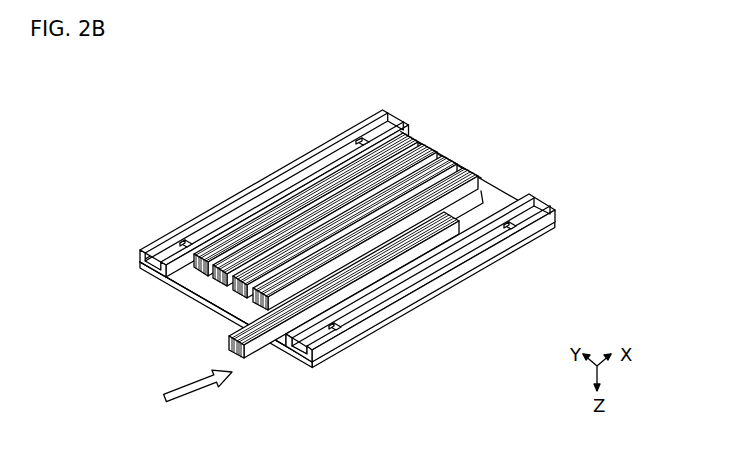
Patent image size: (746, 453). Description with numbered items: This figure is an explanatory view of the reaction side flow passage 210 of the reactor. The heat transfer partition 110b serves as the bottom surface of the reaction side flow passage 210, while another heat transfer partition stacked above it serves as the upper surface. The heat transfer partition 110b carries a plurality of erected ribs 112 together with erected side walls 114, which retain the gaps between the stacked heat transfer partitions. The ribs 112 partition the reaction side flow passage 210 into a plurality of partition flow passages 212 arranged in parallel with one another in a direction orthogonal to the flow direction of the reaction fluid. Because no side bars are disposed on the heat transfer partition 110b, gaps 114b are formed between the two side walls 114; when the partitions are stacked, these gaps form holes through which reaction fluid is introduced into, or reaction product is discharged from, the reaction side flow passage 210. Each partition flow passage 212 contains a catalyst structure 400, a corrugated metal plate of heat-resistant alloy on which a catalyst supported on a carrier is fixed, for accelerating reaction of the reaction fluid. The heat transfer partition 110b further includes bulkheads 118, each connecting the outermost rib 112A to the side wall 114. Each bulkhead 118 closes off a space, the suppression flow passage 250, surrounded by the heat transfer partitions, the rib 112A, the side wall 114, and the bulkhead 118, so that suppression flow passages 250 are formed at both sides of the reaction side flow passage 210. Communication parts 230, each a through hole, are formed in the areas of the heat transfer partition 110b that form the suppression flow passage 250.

The reaction side flow passage 210 is at (589, 69).
The side wall 114 is at (330, 128).
The outermost rib 112A is at (368, 208).
The bulkhead 118 is at (386, 108).
The suppression flow passage 250 is at (283, 192).
The communication part 230 is at (362, 140).
The erected rib 112 is at (472, 186).
The partition flow passage 212 is at (487, 210).
The gap 114b is at (473, 170).
The catalyst structure 400 is at (258, 357).
The heat transfer partition 110b is at (511, 240).